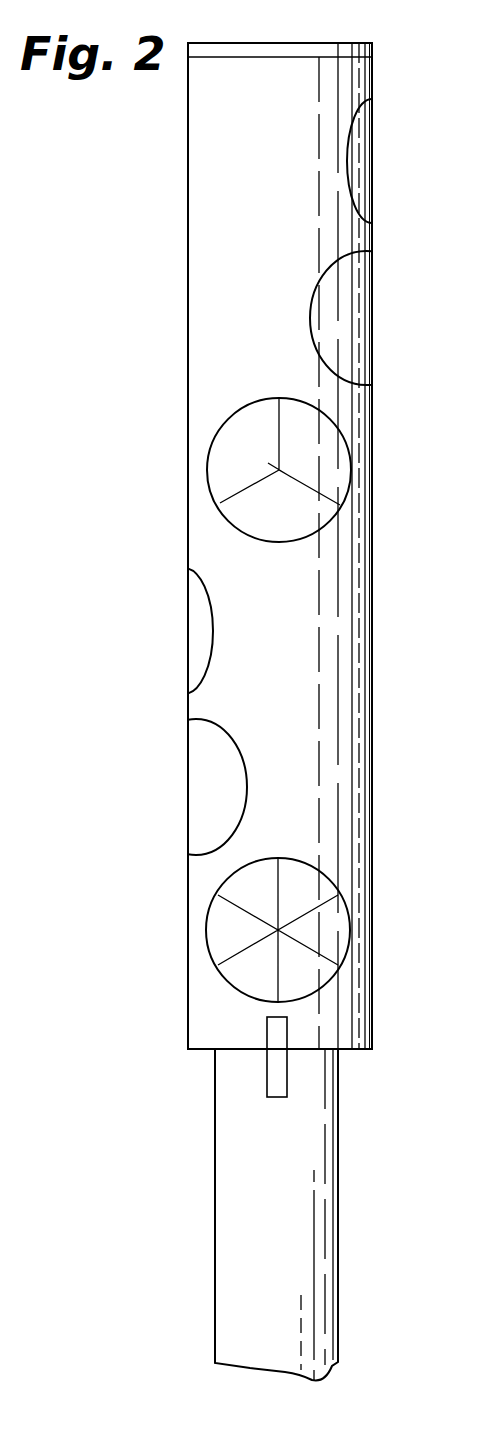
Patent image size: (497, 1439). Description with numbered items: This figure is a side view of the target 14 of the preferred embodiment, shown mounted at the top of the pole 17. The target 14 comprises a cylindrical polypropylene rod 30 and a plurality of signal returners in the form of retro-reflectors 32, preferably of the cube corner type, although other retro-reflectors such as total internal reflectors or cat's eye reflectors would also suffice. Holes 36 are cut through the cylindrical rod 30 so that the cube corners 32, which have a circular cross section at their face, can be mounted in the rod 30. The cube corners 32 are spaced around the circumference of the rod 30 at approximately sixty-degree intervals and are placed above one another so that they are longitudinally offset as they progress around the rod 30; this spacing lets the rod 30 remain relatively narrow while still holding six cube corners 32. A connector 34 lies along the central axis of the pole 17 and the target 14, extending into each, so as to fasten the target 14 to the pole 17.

The target 14 is at (402, 653).
The pole 17 is at (327, 1212).
The cylindrical polypropylene rod 30 is at (278, 43).
The retro-reflectors 32 is at (325, 442).
The connector 34 is at (273, 1068).
The holes 36 is at (370, 257).